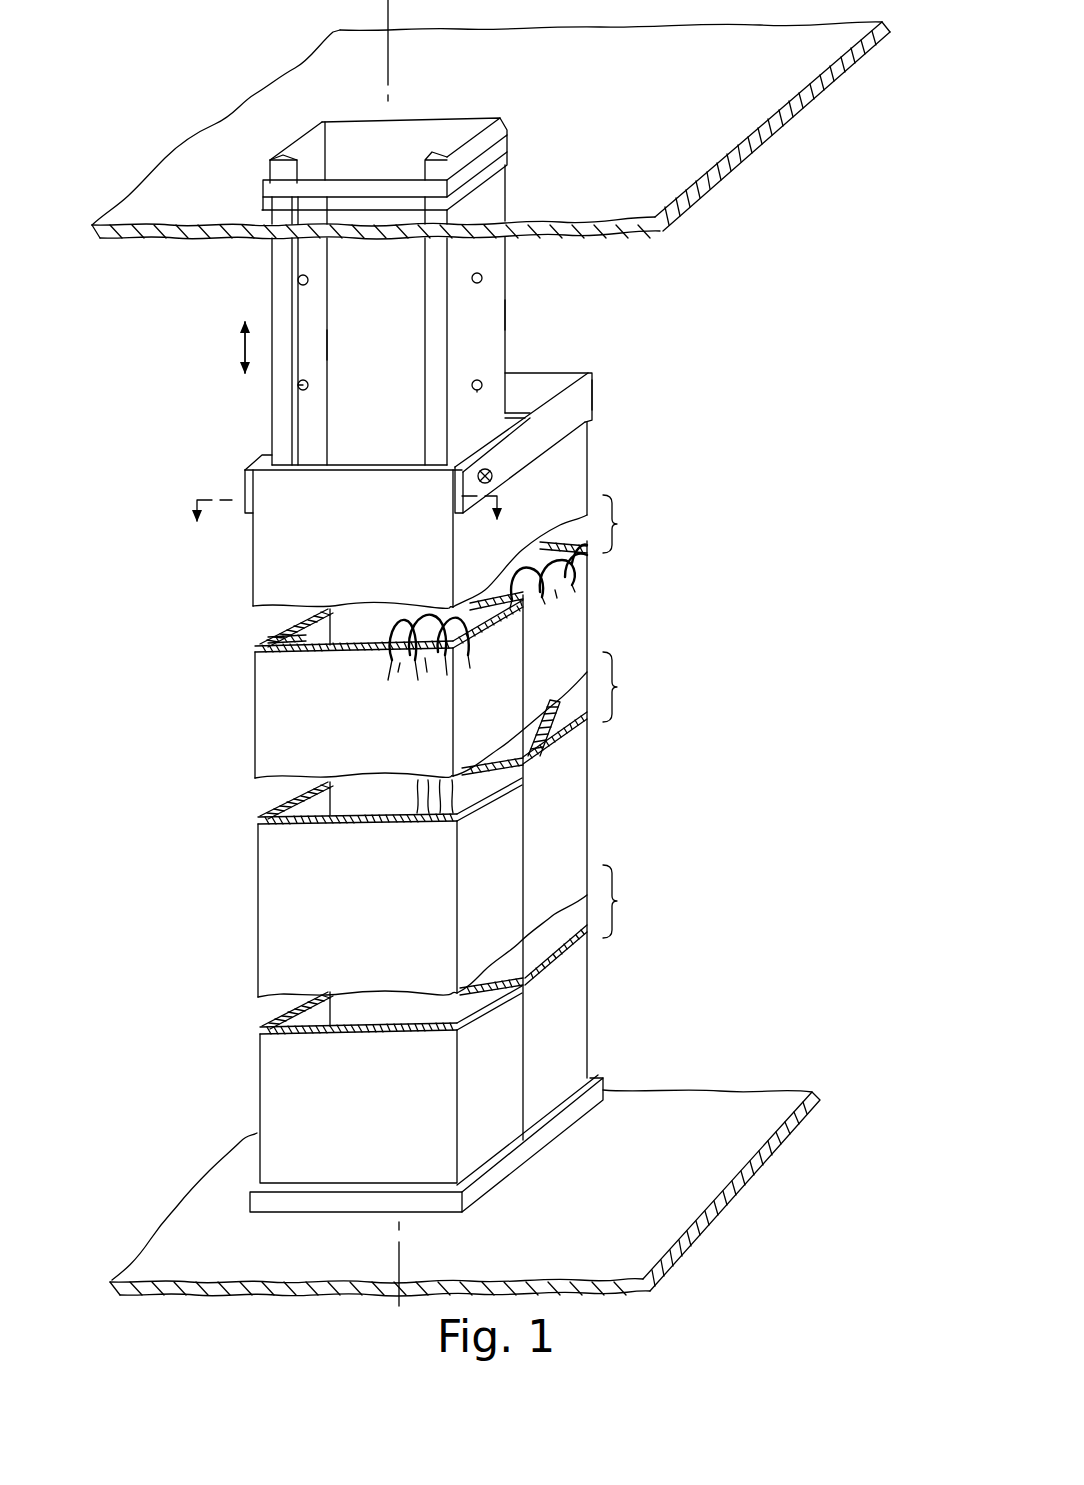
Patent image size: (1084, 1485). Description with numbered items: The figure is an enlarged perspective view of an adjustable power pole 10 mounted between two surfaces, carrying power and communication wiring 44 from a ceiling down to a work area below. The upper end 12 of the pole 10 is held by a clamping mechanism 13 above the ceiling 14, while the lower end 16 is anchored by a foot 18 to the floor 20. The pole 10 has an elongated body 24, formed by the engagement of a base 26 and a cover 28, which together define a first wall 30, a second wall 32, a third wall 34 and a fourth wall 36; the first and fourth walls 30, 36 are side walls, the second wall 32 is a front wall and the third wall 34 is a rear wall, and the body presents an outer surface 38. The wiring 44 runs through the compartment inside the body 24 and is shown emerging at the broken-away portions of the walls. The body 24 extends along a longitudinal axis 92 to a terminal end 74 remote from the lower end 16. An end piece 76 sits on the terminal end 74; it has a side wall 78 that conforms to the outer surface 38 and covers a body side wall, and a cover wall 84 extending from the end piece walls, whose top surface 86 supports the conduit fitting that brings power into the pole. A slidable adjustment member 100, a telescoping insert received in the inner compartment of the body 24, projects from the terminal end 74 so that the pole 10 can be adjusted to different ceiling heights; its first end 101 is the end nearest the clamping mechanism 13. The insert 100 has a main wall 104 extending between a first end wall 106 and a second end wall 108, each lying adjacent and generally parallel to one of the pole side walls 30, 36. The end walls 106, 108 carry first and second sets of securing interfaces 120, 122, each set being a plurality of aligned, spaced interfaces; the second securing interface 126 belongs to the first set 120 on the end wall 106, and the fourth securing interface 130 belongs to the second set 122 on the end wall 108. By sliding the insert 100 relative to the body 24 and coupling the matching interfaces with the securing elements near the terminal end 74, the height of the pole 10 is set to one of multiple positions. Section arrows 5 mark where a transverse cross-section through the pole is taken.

The adjustable power pole 10 is at (685, 314).
The upper end 12 is at (497, 118).
The clamping mechanism 13 is at (497, 148).
The ceiling 14 is at (642, 205).
The lower end 16 is at (605, 1052).
The foot 18 is at (513, 1157).
The floor 20 is at (705, 1113).
The elongated body 24 is at (591, 458).
The base 26 is at (253, 578).
The cover 28 is at (577, 438).
The first wall 30 is at (560, 493).
The second wall 32 is at (273, 595).
The third wall 34 is at (596, 616).
The fourth wall 36 is at (250, 692).
The outer surface 38 is at (255, 745).
The wiring 44 is at (427, 690).
The terminal end 74 is at (268, 465).
The end piece 76 is at (536, 371).
The side wall 78 is at (577, 398).
The cover wall 84 is at (540, 390).
The top surface 86 is at (573, 372).
The longitudinal axis 92 is at (420, 13).
The slidable adjustment member 100 is at (508, 288).
The first end 101 is at (265, 170).
The main wall 104 is at (352, 248).
The first end wall 106 is at (497, 267).
The second end wall 108 is at (312, 432).
The first set of securing interfaces 120 is at (462, 289).
The second set of securing interfaces 122 is at (308, 372).
The second securing interface 126 is at (477, 380).
The fourth securing interface 130 is at (308, 386).
The section line 5 is at (347, 531).